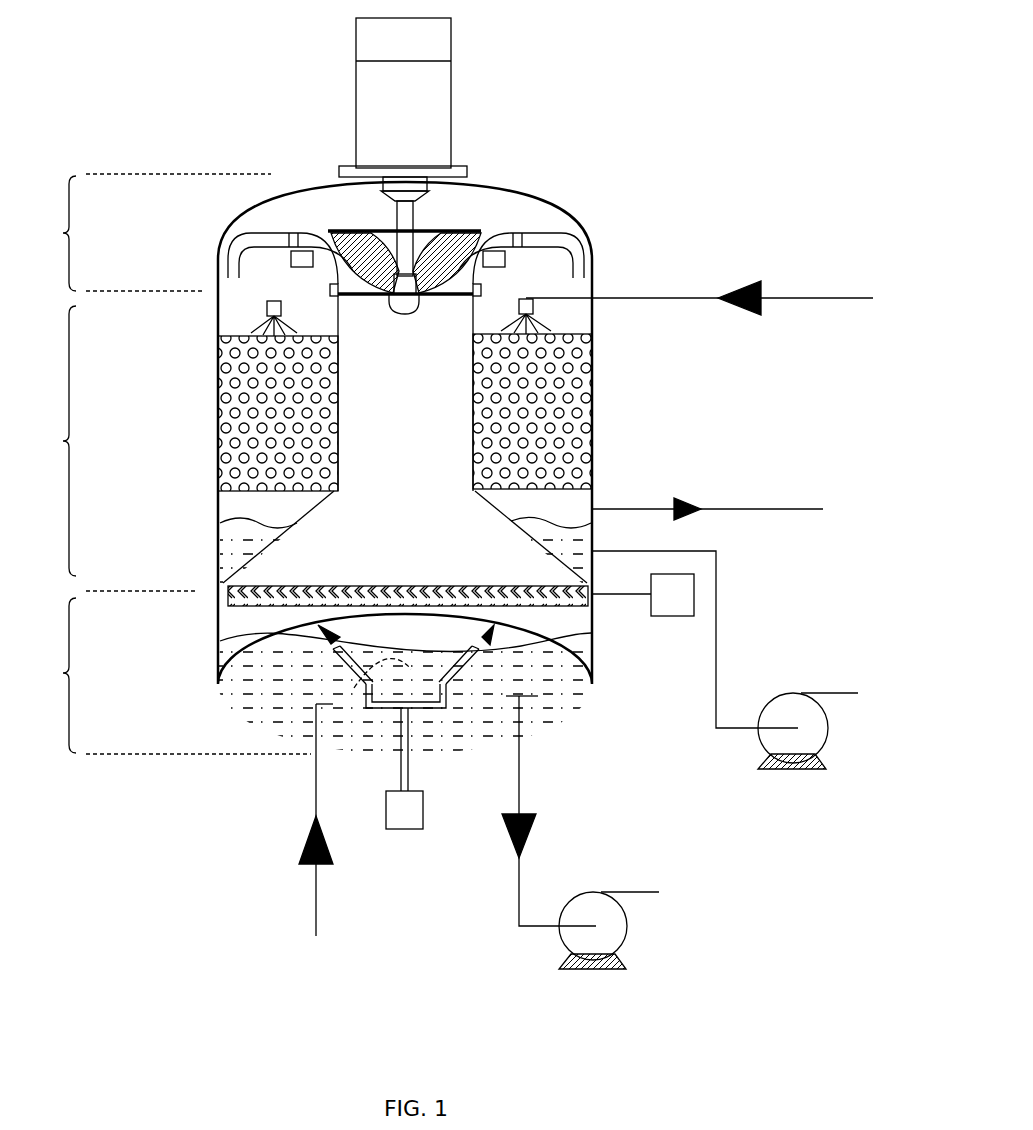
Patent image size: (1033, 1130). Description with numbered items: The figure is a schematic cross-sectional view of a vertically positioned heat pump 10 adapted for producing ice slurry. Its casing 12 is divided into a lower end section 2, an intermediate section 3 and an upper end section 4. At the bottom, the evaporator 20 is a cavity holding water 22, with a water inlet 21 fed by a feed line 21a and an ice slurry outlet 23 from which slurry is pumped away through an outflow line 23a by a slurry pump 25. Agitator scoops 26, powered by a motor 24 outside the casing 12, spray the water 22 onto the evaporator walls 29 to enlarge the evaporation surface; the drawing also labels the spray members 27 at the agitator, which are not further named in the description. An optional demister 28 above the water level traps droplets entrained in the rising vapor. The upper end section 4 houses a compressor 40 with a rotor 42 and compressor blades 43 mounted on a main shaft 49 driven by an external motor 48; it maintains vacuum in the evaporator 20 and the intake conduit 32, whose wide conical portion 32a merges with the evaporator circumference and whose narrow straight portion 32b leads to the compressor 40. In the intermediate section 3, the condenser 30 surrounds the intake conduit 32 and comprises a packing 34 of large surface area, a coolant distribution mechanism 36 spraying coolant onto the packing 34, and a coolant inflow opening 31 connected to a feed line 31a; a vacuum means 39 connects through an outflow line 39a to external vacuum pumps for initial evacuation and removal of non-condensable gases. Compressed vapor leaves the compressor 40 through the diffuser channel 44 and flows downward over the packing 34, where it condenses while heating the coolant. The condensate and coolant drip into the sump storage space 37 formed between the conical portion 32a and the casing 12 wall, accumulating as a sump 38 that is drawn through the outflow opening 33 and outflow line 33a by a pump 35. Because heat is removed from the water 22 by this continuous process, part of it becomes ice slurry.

The heat pump 10 is at (624, 108).
The casing 12 is at (267, 202).
The upper end section 4 is at (156, 232).
The intermediate section 3 is at (120, 448).
The lower end section 2 is at (177, 676).
The evaporator 20 is at (208, 647).
The water inlet 21 is at (315, 745).
The feed line 21a is at (315, 887).
The water 22 is at (278, 690).
The ice slurry outlet 23 is at (522, 738).
The outflow line 23a is at (520, 790).
The motor 24 is at (404, 830).
The slurry pump 25 is at (590, 970).
The scoops for agitation 26 is at (460, 670).
The nozzles 27 is at (318, 627).
The demister 28 is at (232, 596).
The evaporator walls 29 is at (591, 615).
The condenser 30 is at (208, 420).
The coolant inflow opening 31 is at (592, 297).
The feed line 31a is at (795, 297).
The intake conduit 32 is at (420, 386).
The wide conical portion 32a is at (443, 545).
The narrow straight portion 32b is at (405, 432).
The outflow opening 33 is at (592, 555).
The outflow line 33a is at (715, 640).
The packing 34 is at (557, 372).
The pump 35 is at (792, 770).
The coolant distribution mechanism 36 is at (537, 310).
The sump storage space 37 is at (293, 516).
The sump 38 is at (594, 520).
The vacuum means 39 is at (593, 507).
The outflow line 39a is at (782, 508).
The compressor 40 is at (303, 220).
The rotor 42 is at (440, 222).
The compressor blades 43 is at (453, 270).
The diffuser channel 44 is at (227, 232).
The motor 48 is at (433, 80).
The main shaft 49 is at (400, 238).